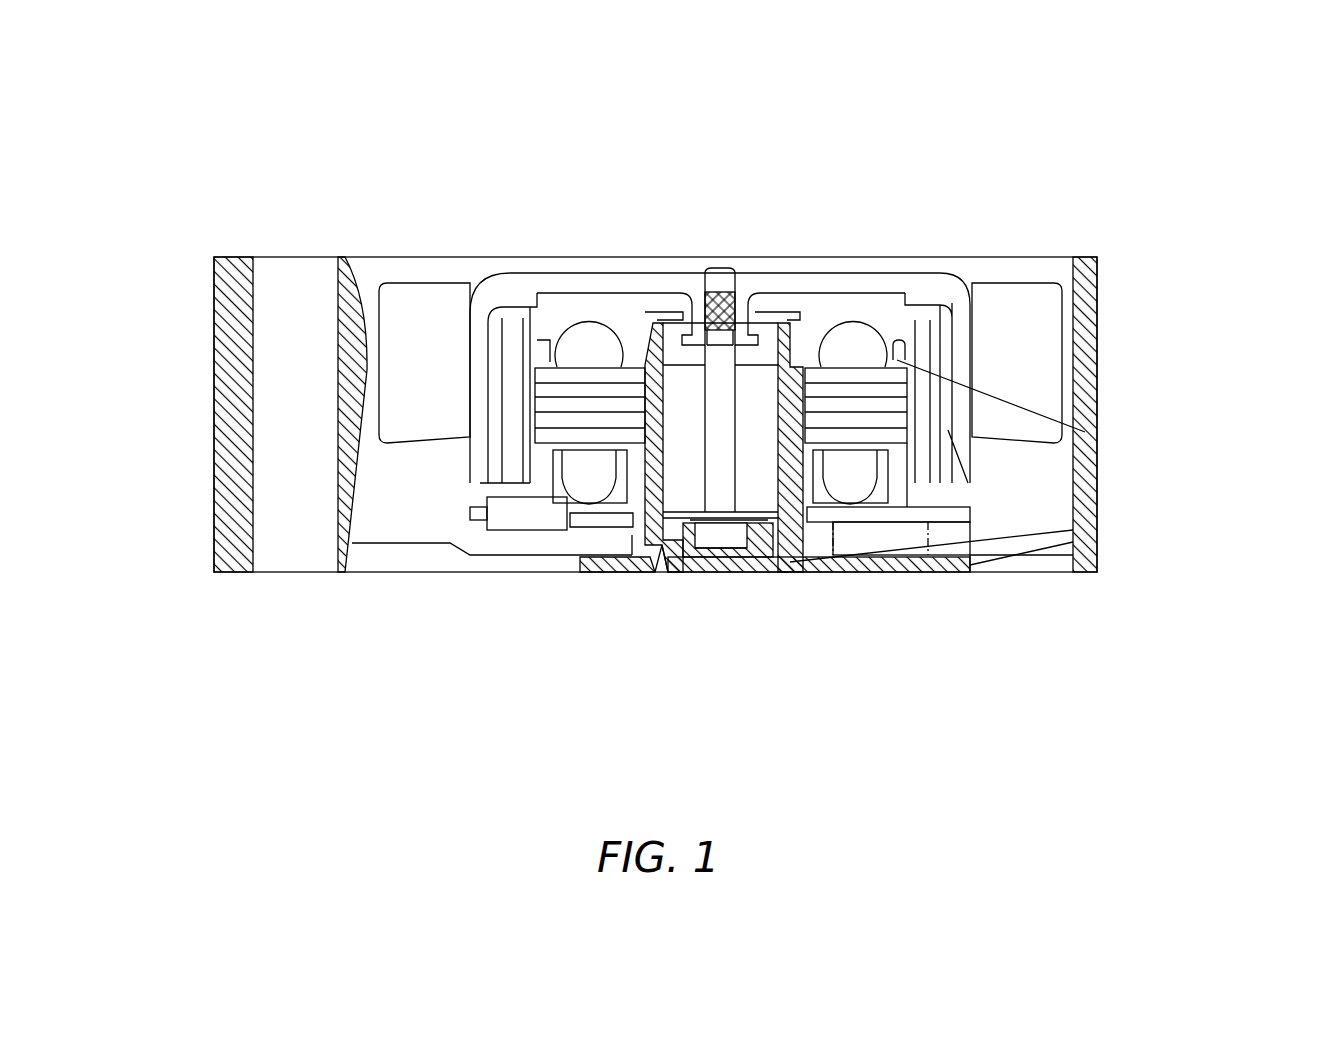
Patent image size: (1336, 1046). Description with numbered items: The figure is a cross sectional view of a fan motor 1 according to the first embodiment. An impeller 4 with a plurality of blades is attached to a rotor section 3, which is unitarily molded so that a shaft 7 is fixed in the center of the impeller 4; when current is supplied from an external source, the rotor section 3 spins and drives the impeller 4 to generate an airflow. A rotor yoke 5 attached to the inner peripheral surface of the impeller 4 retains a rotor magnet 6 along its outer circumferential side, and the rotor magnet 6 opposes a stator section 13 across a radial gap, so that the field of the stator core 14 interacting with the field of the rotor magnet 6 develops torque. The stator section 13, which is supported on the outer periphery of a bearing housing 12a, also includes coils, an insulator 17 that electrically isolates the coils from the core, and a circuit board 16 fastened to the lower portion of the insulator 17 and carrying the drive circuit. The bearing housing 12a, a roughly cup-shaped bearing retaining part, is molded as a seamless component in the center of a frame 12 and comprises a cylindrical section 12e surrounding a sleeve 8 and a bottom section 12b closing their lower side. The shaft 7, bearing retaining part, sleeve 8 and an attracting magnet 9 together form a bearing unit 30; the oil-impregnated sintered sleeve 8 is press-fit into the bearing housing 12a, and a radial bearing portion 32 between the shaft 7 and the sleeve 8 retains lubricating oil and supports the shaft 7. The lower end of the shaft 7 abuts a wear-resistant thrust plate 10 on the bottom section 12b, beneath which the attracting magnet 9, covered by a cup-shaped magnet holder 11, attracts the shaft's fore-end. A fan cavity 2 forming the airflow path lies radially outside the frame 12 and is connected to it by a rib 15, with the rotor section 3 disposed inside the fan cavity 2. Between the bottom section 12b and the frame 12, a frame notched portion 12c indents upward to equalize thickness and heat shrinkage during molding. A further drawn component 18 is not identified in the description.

The fan motor 1 is at (1112, 428).
The fan cavity 2 is at (355, 383).
The rotor section 3 is at (688, 262).
The impeller 4 is at (433, 320).
The rotor yoke 5 is at (897, 360).
The rotor magnet 6 is at (925, 350).
The shaft 7 is at (725, 415).
The sleeve 8 is at (677, 453).
The attracting magnet 9 is at (758, 550).
The thrust plate 10 is at (713, 560).
The magnet holder 11 is at (827, 573).
The frame 12 is at (890, 563).
The bearing housing 12a is at (968, 573).
The bottom section 12b is at (790, 562).
The frame notched portion 12c is at (660, 567).
The cylindrical section 12e is at (465, 437).
The stator section 13 is at (887, 313).
The stator core 14 is at (587, 385).
The rib 15 is at (400, 560).
The circuit board 16 is at (1075, 538).
The insulator 17 is at (968, 437).
The stator core 18 is at (603, 332).
The bearing unit 30 is at (602, 690).
The radial bearing portion 32 is at (705, 425).